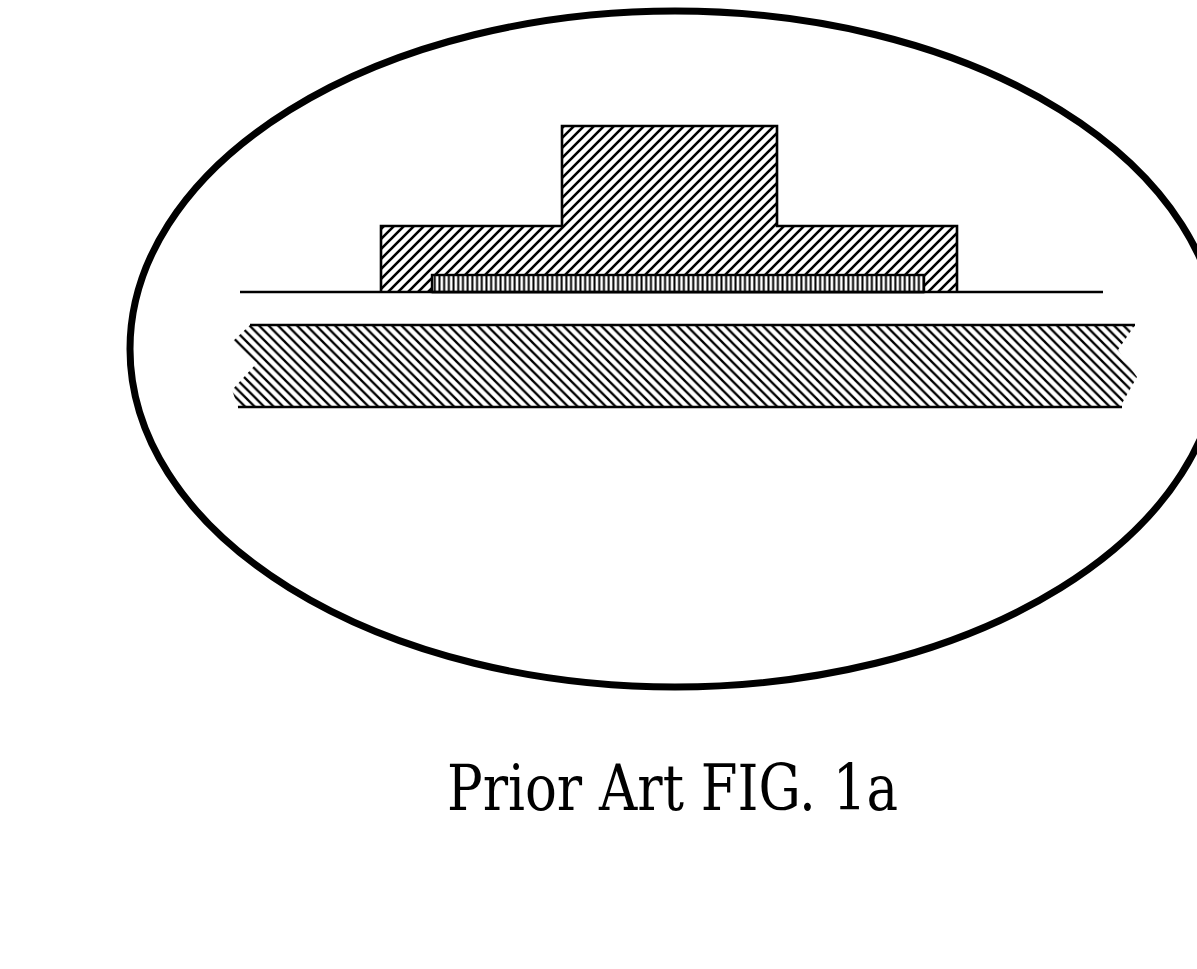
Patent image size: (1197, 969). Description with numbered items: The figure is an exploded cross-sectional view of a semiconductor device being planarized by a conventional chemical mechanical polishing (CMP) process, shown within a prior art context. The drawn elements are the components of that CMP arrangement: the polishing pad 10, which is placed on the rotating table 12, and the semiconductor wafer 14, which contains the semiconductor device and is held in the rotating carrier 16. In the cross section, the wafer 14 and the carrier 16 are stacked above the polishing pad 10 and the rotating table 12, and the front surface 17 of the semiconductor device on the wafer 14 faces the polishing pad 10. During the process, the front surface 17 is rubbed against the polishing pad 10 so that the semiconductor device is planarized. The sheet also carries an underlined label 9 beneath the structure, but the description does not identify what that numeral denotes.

The prior art semiconductor device 9 is at (691, 557).
The polishing pad 10 is at (348, 309).
The rotating table 12 is at (378, 391).
The semiconductor wafer 14 is at (874, 276).
The rotating carrier 16 is at (550, 238).
The front surface 17 is at (792, 294).